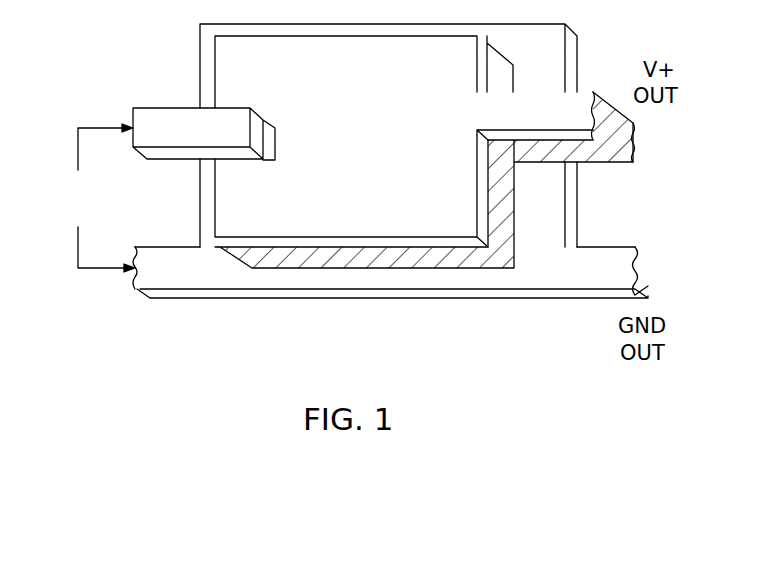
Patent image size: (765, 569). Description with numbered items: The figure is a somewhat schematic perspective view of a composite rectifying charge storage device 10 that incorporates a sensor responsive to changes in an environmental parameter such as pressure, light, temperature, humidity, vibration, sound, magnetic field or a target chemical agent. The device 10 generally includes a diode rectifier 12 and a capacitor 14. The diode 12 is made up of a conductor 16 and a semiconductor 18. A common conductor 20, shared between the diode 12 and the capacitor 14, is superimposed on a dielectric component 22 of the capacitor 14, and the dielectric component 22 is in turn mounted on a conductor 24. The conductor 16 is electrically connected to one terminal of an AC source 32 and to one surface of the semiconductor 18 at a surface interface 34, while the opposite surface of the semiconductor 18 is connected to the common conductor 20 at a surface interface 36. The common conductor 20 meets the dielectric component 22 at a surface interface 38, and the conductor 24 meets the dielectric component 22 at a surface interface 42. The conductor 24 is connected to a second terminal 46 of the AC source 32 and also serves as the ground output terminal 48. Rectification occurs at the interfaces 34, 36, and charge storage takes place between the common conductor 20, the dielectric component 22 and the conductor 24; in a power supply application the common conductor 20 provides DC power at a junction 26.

The composite rectifying charge storage device 10 is at (255, 300).
The diode rectifier 12 is at (187, 150).
The capacitor 14 is at (438, 295).
The conductor 16 is at (236, 120).
The semiconductor 18 is at (270, 143).
The common conductor 20 is at (432, 102).
The dielectric component 22 is at (237, 257).
The conductor 24 is at (535, 275).
The junction 26 is at (593, 92).
The AC source 32 is at (62, 177).
The surface interface 34 is at (262, 118).
The surface interface 36 is at (278, 165).
The surface interface 38 is at (362, 248).
The surface interface 42 is at (412, 270).
The second terminal 46 is at (146, 276).
The ground output terminal 48 is at (620, 262).